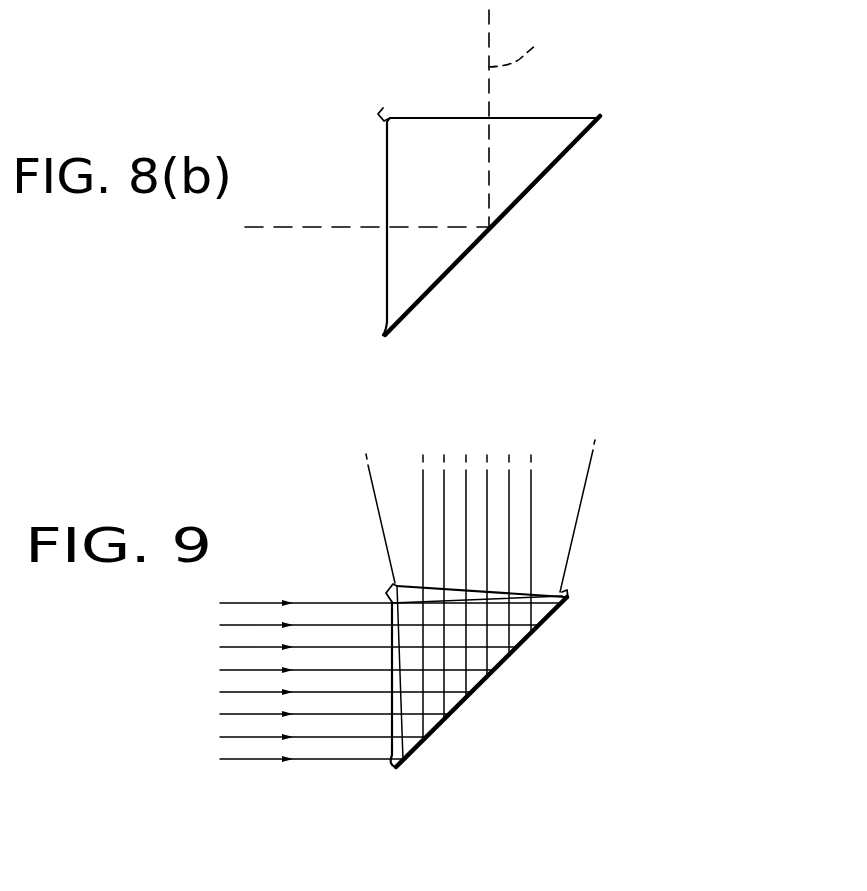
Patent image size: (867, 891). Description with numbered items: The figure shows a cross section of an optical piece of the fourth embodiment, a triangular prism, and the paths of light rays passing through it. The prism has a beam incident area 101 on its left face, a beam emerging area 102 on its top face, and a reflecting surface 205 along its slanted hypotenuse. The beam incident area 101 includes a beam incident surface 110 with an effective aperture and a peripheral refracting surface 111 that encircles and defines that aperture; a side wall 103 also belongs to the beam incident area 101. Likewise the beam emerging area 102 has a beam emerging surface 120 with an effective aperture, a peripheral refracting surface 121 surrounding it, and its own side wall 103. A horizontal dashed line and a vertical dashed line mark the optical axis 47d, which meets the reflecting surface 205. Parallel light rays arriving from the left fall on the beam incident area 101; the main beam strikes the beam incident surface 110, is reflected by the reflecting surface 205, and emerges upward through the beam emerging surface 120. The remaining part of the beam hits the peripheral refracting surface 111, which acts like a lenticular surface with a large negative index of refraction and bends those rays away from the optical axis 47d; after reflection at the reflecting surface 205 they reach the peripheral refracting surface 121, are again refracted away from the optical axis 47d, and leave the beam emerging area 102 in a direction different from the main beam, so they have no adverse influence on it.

The beam incident area 101 is at (372, 273).
The beam emerging area 102 is at (543, 118).
The side wall 103 is at (384, 118).
The optical axis 47d is at (538, 40).
The reflecting surface 205 is at (523, 198).
In FIG. 9, the reflecting surface 205 is at (503, 657).
In FIG. 9, the beam incident surface 110 is at (383, 682).
In FIG. 9, the peripheral refracting surface 111 is at (390, 762).
In FIG. 9, the beam emerging surface 120 is at (500, 588).
In FIG. 9, the peripheral refracting surface 121 is at (552, 581).